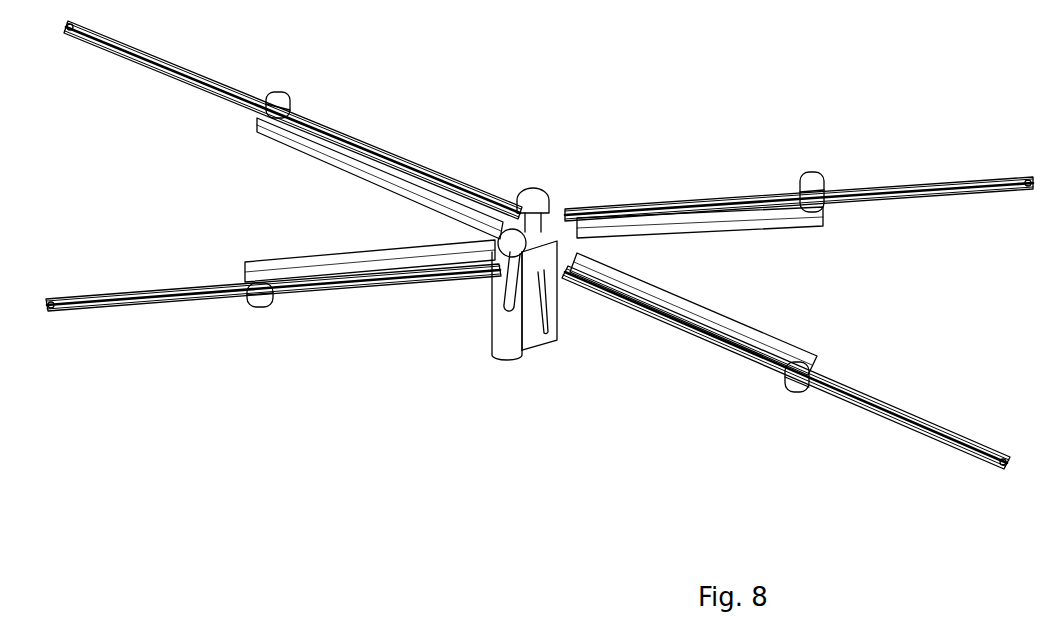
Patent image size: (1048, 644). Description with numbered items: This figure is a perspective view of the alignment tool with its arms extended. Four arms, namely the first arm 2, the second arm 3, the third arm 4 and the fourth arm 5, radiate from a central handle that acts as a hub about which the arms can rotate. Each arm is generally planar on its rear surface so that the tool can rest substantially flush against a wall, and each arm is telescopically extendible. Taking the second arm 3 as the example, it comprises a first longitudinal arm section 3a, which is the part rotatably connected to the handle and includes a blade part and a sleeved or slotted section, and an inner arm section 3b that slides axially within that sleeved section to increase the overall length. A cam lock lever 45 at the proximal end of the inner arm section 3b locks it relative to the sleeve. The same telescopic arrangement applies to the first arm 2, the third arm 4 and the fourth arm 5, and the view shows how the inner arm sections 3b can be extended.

The first arm 2 is at (400, 155).
The second arm 3 is at (681, 200).
The first longitudinal arm section 3a is at (753, 229).
The inner arm section 3b is at (977, 200).
The cam lock lever 45 is at (782, 200).
The third arm 4 is at (670, 340).
The fourth arm 5 is at (383, 290).